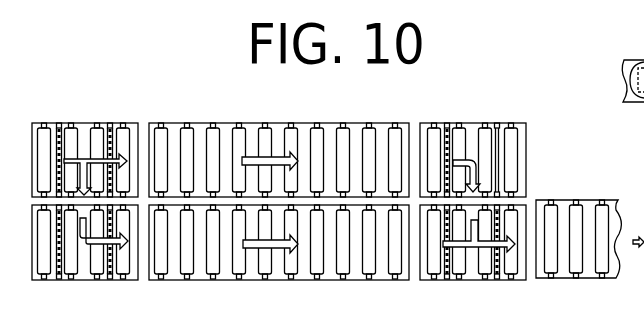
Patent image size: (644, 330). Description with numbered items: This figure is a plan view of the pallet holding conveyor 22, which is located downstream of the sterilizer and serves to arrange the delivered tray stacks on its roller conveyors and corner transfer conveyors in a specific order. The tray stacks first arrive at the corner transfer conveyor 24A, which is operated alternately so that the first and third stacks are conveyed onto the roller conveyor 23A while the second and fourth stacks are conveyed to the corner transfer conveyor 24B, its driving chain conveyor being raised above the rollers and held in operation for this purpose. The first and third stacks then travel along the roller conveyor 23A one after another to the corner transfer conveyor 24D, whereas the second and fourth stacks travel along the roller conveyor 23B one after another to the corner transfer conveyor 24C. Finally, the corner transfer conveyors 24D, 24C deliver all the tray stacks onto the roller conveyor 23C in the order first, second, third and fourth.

The pallet holding conveyor 22 is at (225, 106).
The roller conveyor 23A is at (308, 123).
The roller conveyor 23B is at (296, 281).
The roller conveyor 23C is at (576, 199).
The corner transfer conveyor 24A is at (70, 123).
The corner transfer conveyor 24B is at (71, 281).
The corner transfer conveyor 24C is at (487, 281).
The corner transfer conveyor 24D is at (459, 123).